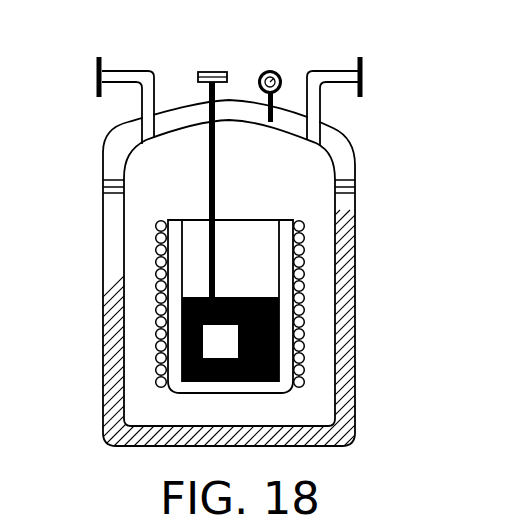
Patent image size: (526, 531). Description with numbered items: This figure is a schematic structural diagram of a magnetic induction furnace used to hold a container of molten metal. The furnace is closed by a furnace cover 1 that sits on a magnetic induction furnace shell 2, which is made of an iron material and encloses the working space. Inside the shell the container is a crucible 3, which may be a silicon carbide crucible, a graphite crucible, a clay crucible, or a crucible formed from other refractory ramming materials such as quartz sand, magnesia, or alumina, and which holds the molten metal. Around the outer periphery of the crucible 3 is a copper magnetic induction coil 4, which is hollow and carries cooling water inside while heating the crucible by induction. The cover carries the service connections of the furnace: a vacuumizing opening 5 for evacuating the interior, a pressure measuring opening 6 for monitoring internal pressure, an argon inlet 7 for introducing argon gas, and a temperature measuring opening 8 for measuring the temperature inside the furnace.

The furnace cover 1 is at (341, 147).
The magnetic induction furnace shell 2 is at (351, 198).
The crucible 3 is at (287, 273).
The magnetic induction coil 4 is at (297, 312).
The vacuumizing opening 5 is at (361, 70).
The pressure measuring opening 6 is at (281, 75).
The argon inlet 7 is at (98, 70).
The temperature measuring opening 8 is at (200, 74).